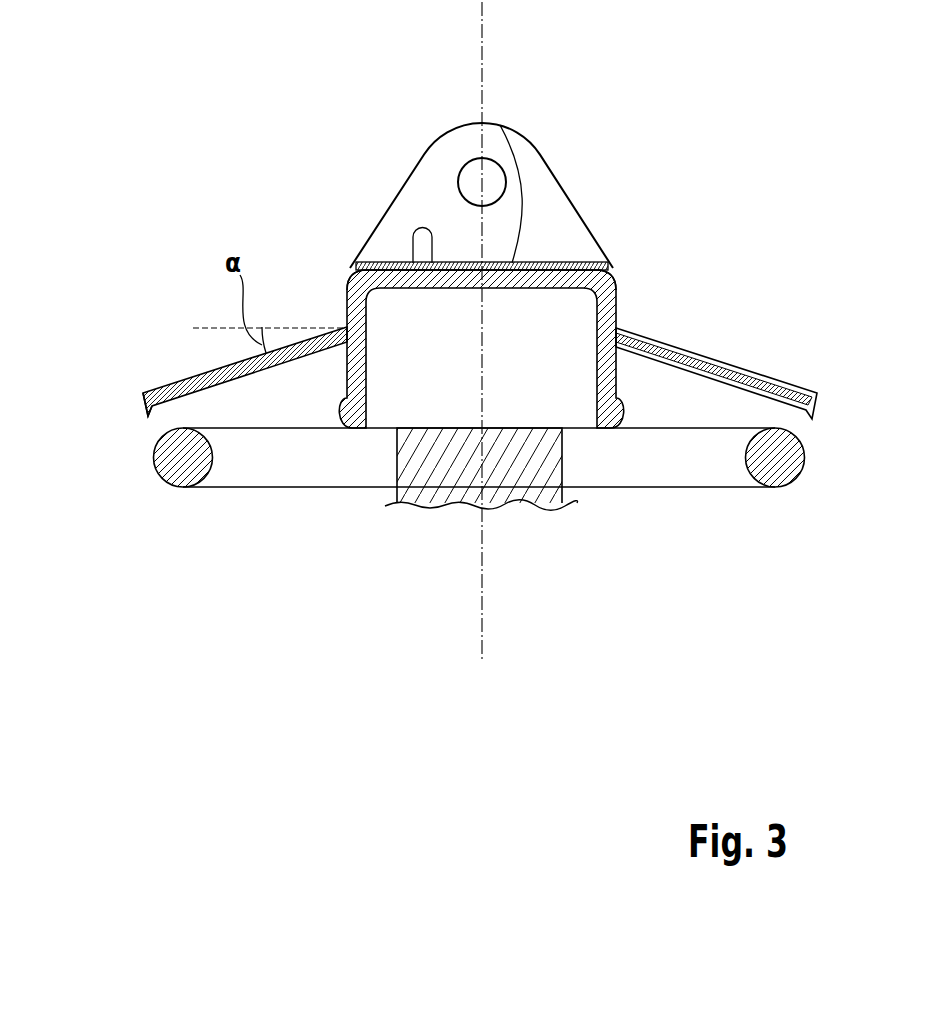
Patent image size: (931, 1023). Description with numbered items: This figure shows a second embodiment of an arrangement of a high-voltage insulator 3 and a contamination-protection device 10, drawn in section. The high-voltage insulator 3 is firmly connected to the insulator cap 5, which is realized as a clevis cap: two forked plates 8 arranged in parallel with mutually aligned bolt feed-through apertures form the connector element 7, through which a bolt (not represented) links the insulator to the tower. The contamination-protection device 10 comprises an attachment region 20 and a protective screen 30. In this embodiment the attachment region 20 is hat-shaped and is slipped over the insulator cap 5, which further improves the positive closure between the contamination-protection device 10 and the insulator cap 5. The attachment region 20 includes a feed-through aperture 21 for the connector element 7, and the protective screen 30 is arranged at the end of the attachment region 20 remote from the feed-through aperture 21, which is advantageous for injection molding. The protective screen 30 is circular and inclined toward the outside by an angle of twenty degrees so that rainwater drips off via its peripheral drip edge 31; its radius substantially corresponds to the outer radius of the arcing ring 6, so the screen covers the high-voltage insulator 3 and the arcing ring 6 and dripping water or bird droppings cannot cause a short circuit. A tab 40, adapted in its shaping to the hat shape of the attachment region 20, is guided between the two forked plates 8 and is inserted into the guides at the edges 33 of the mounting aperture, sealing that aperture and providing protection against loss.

The high-voltage insulator 3 is at (428, 502).
The insulator cap 5 is at (541, 156).
The arcing ring 6 is at (183, 468).
The connector element 7 is at (546, 219).
The forked plates 8 is at (430, 178).
The contamination-protection device 10 is at (140, 365).
The attachment region 20 is at (588, 263).
The feed-through aperture 21 is at (392, 262).
The protective screen 30 is at (192, 377).
The peripheral drip edge 31 is at (147, 412).
The edges of the mounting aperture 33 is at (733, 365).
The tab 40 is at (500, 125).